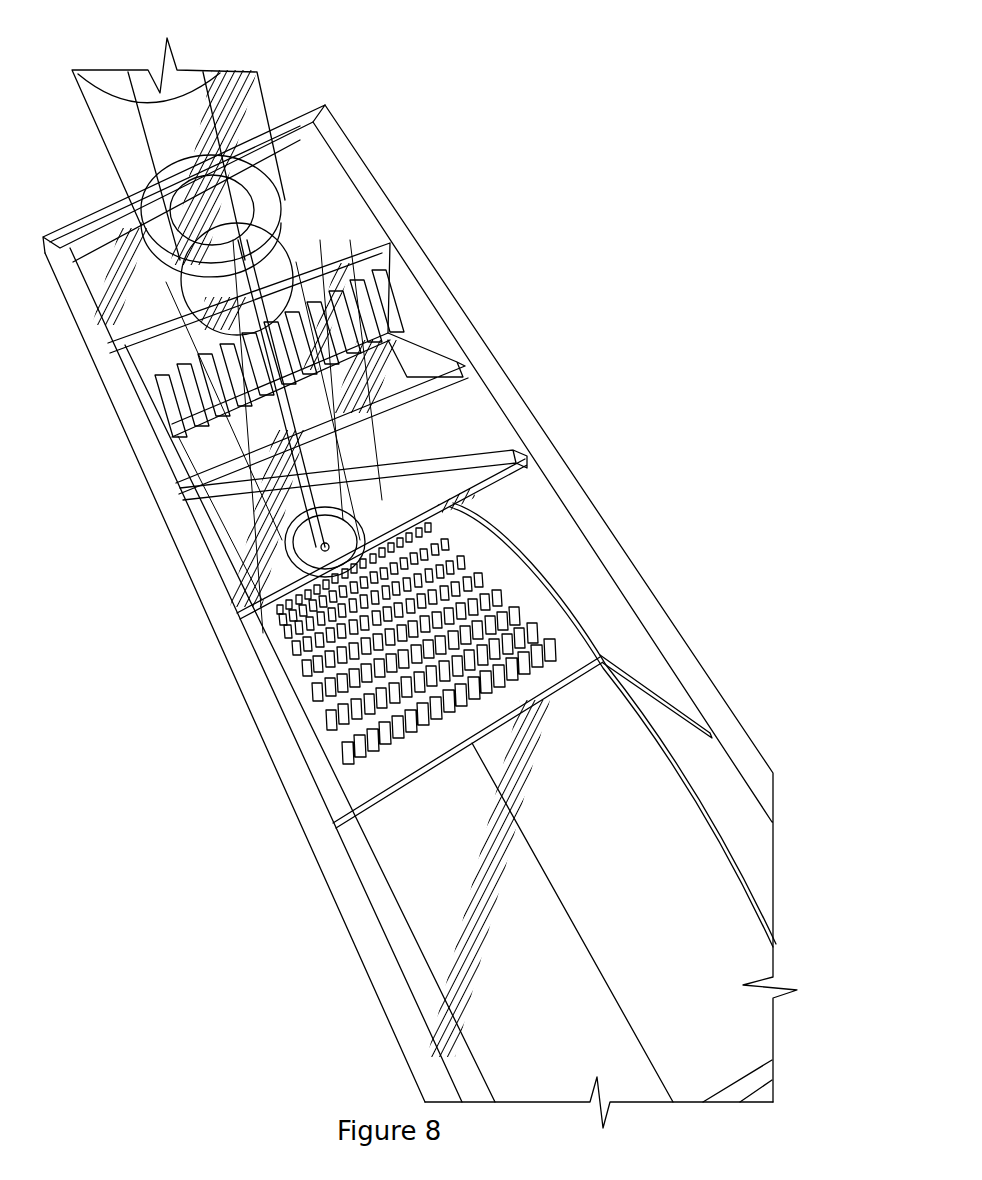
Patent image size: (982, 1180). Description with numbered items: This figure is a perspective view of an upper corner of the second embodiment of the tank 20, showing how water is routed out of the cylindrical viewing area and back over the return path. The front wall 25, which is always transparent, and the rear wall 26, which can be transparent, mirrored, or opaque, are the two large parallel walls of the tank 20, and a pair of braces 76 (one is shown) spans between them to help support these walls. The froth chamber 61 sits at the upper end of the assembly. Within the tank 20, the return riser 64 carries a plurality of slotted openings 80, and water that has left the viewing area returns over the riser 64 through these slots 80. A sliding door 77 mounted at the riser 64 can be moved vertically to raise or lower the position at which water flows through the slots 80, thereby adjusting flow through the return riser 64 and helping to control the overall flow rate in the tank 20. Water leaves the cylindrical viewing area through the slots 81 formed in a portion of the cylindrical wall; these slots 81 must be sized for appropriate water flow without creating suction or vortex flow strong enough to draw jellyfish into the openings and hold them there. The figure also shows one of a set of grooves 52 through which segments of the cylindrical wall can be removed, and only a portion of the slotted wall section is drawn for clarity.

The tank 20 is at (590, 273).
The front wall 25 is at (233, 638).
The rear wall 26 is at (562, 477).
The groove 52 is at (659, 692).
The froth chamber 61 is at (304, 69).
The return riser 64 is at (225, 510).
The brace 76 is at (477, 432).
The sliding door 77 is at (324, 360).
The slotted opening 80 is at (377, 282).
The slot 81 is at (478, 550).